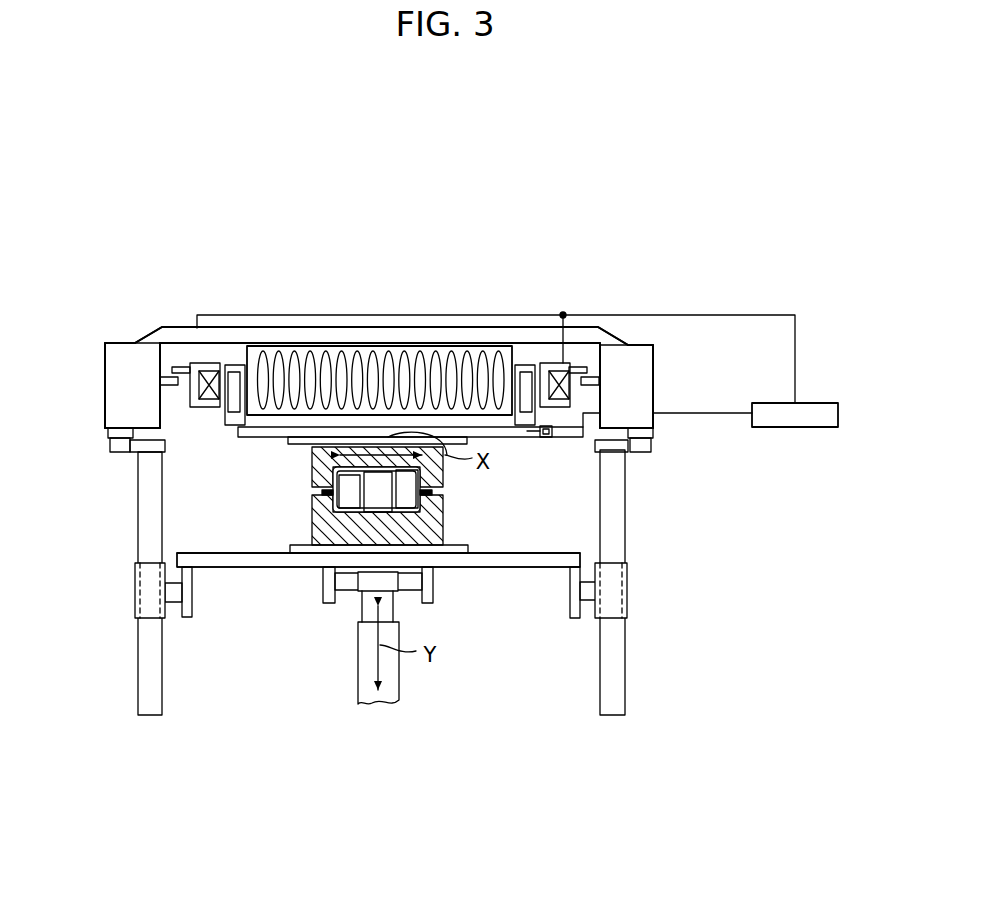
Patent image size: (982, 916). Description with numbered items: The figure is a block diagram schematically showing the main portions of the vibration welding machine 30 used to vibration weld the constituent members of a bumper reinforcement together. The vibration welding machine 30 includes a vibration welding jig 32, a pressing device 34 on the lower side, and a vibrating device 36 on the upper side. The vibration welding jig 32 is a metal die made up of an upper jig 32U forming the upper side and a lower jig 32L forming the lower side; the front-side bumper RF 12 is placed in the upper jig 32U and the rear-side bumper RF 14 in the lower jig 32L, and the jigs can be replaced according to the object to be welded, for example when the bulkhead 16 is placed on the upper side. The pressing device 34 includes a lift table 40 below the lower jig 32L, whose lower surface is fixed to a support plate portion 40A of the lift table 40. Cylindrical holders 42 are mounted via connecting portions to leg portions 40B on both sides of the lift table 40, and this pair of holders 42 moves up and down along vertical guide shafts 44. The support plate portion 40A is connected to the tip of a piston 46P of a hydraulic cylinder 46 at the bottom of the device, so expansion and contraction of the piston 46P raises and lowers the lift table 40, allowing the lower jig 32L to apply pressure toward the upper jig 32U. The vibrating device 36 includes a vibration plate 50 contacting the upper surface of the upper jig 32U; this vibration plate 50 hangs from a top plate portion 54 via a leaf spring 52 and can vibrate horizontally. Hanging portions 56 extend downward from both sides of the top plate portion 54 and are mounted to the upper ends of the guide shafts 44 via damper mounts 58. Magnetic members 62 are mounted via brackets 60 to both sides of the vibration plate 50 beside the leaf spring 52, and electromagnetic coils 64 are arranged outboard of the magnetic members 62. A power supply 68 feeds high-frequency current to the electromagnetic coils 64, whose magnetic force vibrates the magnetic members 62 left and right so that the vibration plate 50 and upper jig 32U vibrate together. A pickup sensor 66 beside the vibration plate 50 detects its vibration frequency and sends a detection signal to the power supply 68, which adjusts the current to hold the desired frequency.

The vibration welding machine 30 is at (535, 188).
The vibrating device 36 is at (152, 317).
The hanging portions 56 is at (105, 385).
The power supply 68 is at (812, 403).
The top plate portion 54 is at (365, 346).
The leaf spring 52 is at (415, 350).
The electromagnetic coils 64 is at (213, 363).
The brackets 60 is at (225, 420).
The magnetic members 62 is at (233, 372).
The vibration plate 50 is at (240, 437).
The pickup sensor 66 is at (546, 437).
The damper mounts 58 is at (108, 447).
The vibration welding jig 32 is at (250, 513).
The upper jig 32U is at (312, 460).
The lower jig 32L is at (312, 530).
The bulkhead 16 is at (357, 480).
The front-side bumper RF 12 is at (425, 473).
The rear-side bumper RF 14 is at (425, 503).
The lift table 40 is at (530, 552).
The support plate portion 40A is at (487, 568).
The leg portions 40B is at (192, 600).
The guide shafts 44 is at (138, 515).
The holders 42 is at (135, 587).
The piston 46P is at (362, 598).
The hydraulic cylinder 46 is at (345, 678).
The pressing device 34 is at (272, 688).